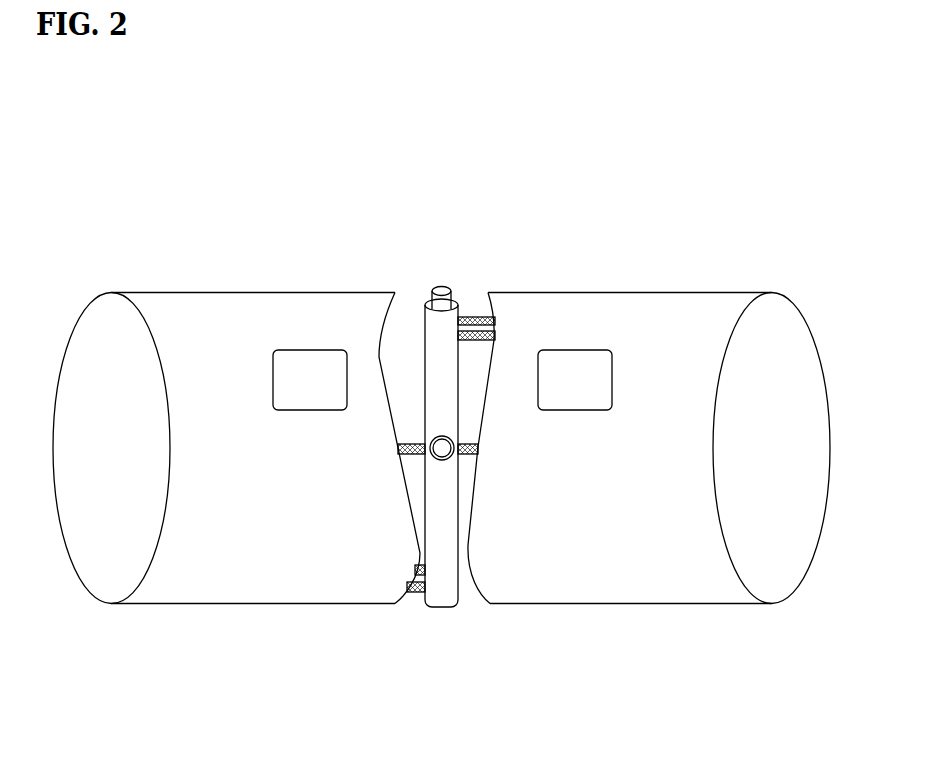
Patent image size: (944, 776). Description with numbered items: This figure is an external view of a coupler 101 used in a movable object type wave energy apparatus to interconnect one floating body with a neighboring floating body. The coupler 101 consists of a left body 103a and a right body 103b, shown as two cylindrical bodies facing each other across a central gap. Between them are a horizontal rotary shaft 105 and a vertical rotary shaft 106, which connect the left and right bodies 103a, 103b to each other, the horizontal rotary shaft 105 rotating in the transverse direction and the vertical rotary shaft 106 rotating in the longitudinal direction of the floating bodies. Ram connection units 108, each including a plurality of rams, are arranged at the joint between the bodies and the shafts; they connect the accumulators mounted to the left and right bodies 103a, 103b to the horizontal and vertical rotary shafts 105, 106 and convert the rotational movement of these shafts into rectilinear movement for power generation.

The coupler 101 is at (419, 260).
The left body 103a is at (235, 302).
The right body 103b is at (684, 313).
The horizontal rotary shaft 105 is at (442, 448).
The vertical rotary shaft 106 is at (430, 368).
The ram connection unit 108 is at (468, 317).